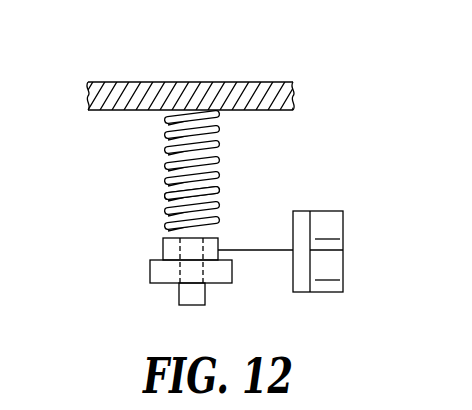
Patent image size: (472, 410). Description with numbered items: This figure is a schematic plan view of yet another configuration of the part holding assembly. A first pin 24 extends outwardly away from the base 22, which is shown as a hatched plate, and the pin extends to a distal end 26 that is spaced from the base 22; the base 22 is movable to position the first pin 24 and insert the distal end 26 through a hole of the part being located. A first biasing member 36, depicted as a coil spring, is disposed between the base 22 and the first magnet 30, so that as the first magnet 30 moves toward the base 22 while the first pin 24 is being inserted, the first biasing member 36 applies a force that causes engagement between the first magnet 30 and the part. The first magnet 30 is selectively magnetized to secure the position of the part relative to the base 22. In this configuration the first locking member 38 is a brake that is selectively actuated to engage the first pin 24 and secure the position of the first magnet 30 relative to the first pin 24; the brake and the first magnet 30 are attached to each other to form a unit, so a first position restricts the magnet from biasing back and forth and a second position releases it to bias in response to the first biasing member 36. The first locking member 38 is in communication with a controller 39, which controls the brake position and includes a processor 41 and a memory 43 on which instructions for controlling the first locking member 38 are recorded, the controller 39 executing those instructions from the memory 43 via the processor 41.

The base 22 is at (197, 92).
The first pin 24 is at (193, 152).
The first biasing member 36 is at (212, 197).
The first locking member 38 is at (170, 252).
The first magnet 30 is at (223, 272).
The distal end 26 is at (180, 293).
The controller 39 is at (318, 216).
The processor 41 is at (327, 230).
The memory 43 is at (327, 271).